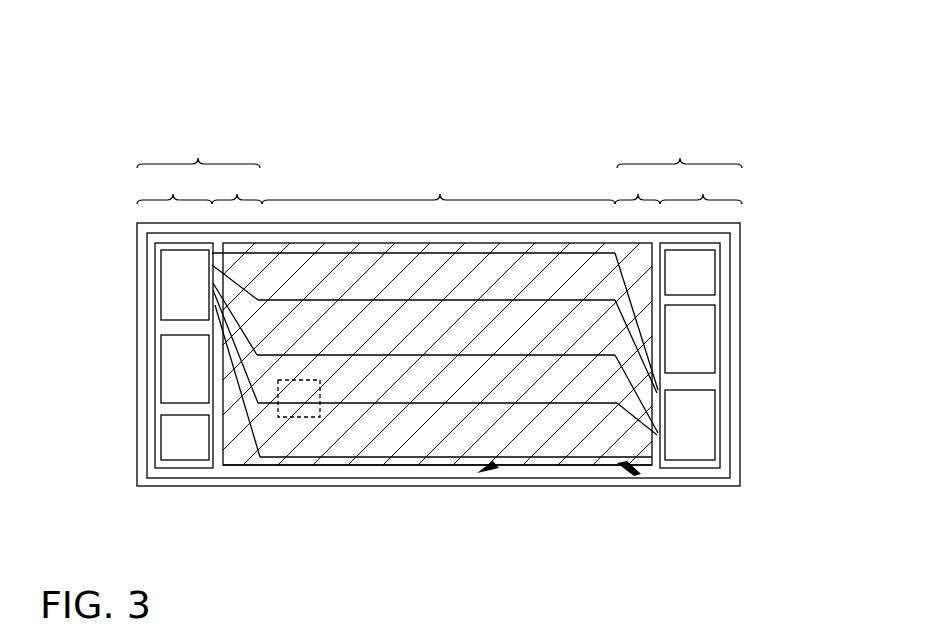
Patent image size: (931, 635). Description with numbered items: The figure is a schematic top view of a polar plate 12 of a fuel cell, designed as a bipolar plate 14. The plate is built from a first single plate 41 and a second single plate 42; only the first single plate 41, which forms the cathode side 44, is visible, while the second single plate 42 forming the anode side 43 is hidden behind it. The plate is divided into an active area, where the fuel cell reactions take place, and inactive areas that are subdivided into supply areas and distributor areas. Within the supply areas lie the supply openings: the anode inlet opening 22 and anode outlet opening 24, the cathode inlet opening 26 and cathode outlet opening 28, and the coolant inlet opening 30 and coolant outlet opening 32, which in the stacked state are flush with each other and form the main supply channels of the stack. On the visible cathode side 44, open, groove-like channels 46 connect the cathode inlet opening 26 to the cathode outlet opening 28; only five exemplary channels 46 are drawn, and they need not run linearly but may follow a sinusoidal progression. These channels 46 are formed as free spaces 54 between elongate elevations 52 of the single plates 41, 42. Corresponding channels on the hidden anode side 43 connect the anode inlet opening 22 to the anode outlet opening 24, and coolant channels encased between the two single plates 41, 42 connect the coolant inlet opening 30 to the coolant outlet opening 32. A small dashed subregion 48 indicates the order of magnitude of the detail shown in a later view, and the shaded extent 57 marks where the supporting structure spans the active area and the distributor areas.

The polar plate 12 is at (441, 316).
The bipolar plate 14 is at (548, 137).
The anode inlet opening 22 is at (158, 443).
The anode outlet opening 24 is at (714, 273).
The cathode inlet opening 26 is at (158, 288).
The cathode outlet opening 28 is at (714, 428).
The coolant inlet opening 30 is at (158, 377).
The coolant outlet opening 32 is at (714, 343).
The first single plate 41 is at (468, 499).
The cathode side 44 is at (468, 499).
The second single plate 42 is at (655, 499).
The anode side 43 is at (640, 474).
The channels 46 is at (435, 429).
The free spaces 54 is at (397, 403).
The subregion 48 is at (302, 415).
The elevations 52 is at (368, 383).
The extent of the supporting structure 57 is at (575, 437).